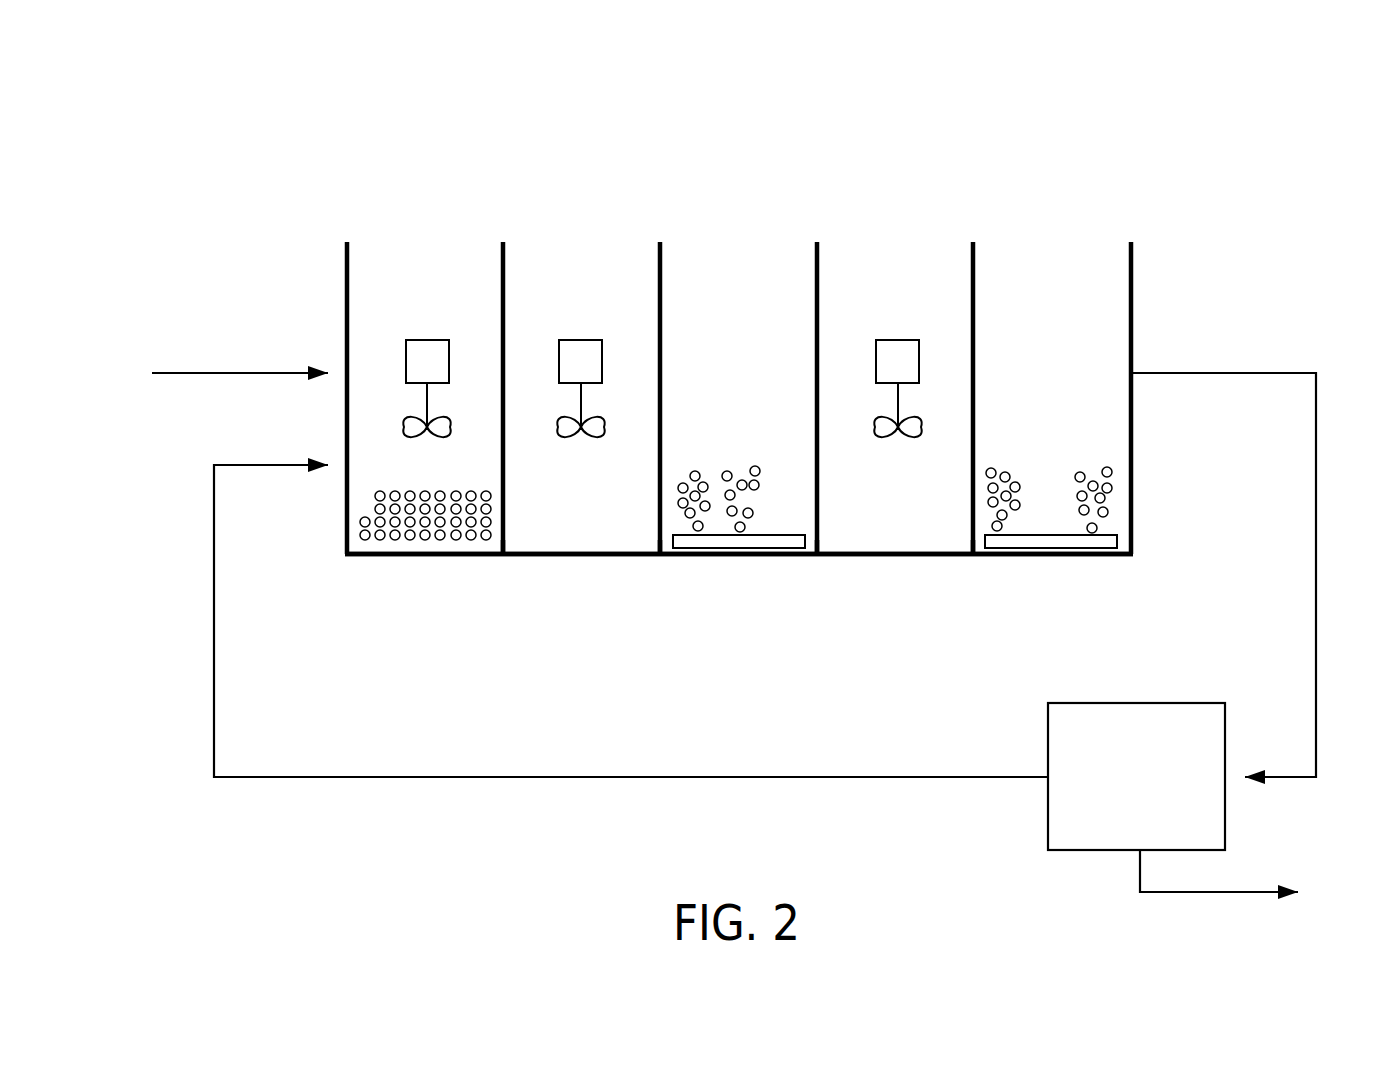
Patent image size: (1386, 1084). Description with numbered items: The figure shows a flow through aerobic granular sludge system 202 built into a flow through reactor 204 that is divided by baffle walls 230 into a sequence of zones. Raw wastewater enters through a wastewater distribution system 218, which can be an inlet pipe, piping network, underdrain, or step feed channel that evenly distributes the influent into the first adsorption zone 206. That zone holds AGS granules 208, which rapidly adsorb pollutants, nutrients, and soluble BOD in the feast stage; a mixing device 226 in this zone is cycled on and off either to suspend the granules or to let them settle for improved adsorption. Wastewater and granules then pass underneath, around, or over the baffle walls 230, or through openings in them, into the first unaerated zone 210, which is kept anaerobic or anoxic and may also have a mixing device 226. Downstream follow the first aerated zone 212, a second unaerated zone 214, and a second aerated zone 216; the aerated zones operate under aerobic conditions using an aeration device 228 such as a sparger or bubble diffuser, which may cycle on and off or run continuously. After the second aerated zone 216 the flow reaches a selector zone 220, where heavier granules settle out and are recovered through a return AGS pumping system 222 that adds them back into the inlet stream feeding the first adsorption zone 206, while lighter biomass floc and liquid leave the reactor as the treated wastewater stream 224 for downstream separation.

The flow through aerobic granular sludge (AGS) system 202 is at (952, 142).
The flow through reactor 204 is at (334, 566).
The first adsorption zone 206 is at (422, 570).
The AGS granules 208 is at (480, 468).
The first unaerated zone 210 is at (585, 571).
The first aerated zone 212 is at (742, 573).
The second unaerated zone 214 is at (888, 572).
The second aerated zone 216 is at (1056, 572).
The wastewater distribution system 218 is at (266, 373).
The selector zone 220 is at (1161, 738).
The return AGS pumping system 222 is at (542, 777).
The treated wastewater stream 224 is at (1260, 892).
The mixing device 226 is at (421, 340).
The aeration device 228 is at (777, 517).
The baffle walls 230 is at (497, 570).